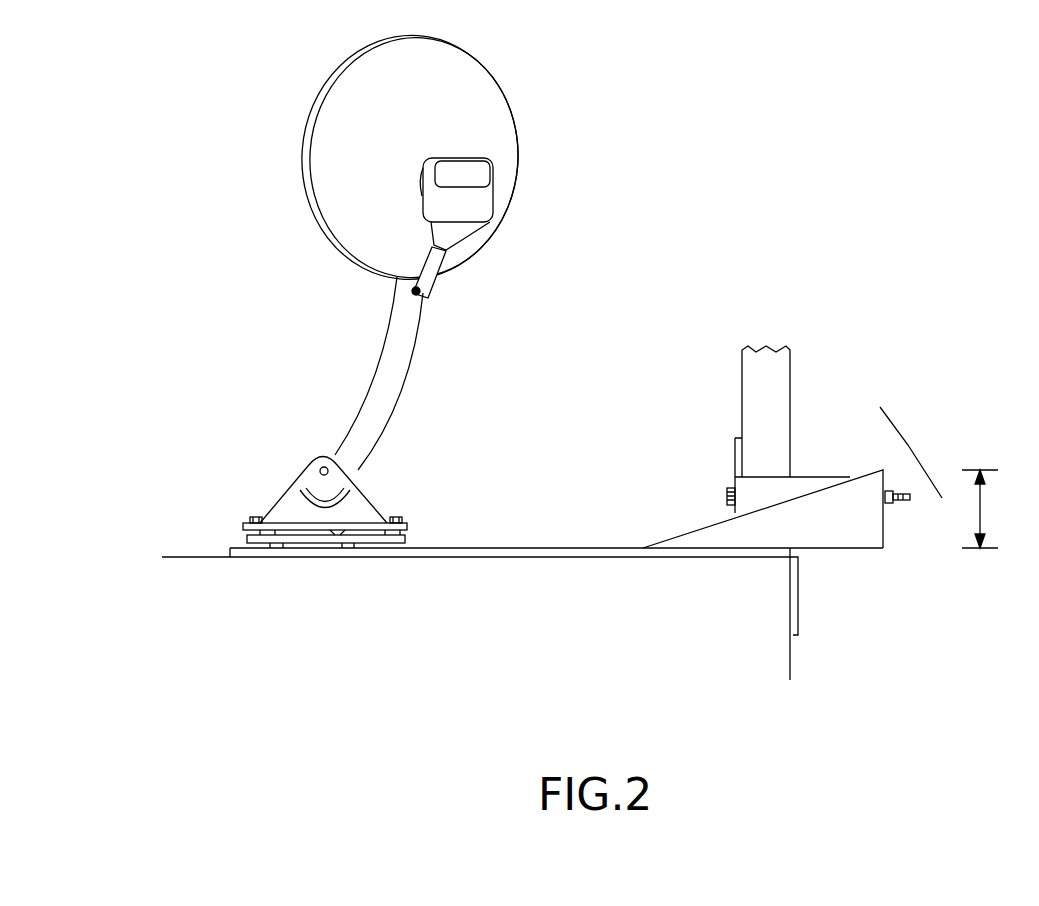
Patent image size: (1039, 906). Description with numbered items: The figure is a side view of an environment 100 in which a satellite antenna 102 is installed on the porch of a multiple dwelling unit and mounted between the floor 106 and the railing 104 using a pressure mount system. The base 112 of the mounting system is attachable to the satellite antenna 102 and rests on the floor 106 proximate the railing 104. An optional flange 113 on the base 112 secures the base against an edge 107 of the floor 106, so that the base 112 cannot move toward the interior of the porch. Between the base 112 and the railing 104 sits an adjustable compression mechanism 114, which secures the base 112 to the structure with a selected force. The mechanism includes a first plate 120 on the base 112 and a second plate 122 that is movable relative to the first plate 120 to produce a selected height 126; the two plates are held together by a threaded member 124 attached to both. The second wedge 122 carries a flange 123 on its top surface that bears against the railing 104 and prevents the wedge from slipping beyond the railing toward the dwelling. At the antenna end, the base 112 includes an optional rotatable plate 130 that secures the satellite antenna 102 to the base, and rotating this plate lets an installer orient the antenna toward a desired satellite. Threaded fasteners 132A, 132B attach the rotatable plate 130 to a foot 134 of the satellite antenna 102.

The environment 100 is at (775, 297).
The satellite antenna 102 is at (380, 360).
The railing 104 is at (778, 388).
The floor 106 is at (612, 594).
The edge 107 is at (792, 652).
The base 112 is at (328, 550).
The flange 113 is at (798, 570).
The adjustable compression mechanism 114 is at (908, 445).
The first plate 120 is at (880, 547).
The second plate 122 is at (737, 508).
The flange 123 is at (736, 460).
The threaded member 124 is at (900, 503).
The selected height 126 is at (982, 506).
The rotatable plate 130 is at (243, 539).
The threaded fastener 132A is at (255, 517).
The threaded fastener 132B is at (398, 517).
The foot 134 is at (320, 453).